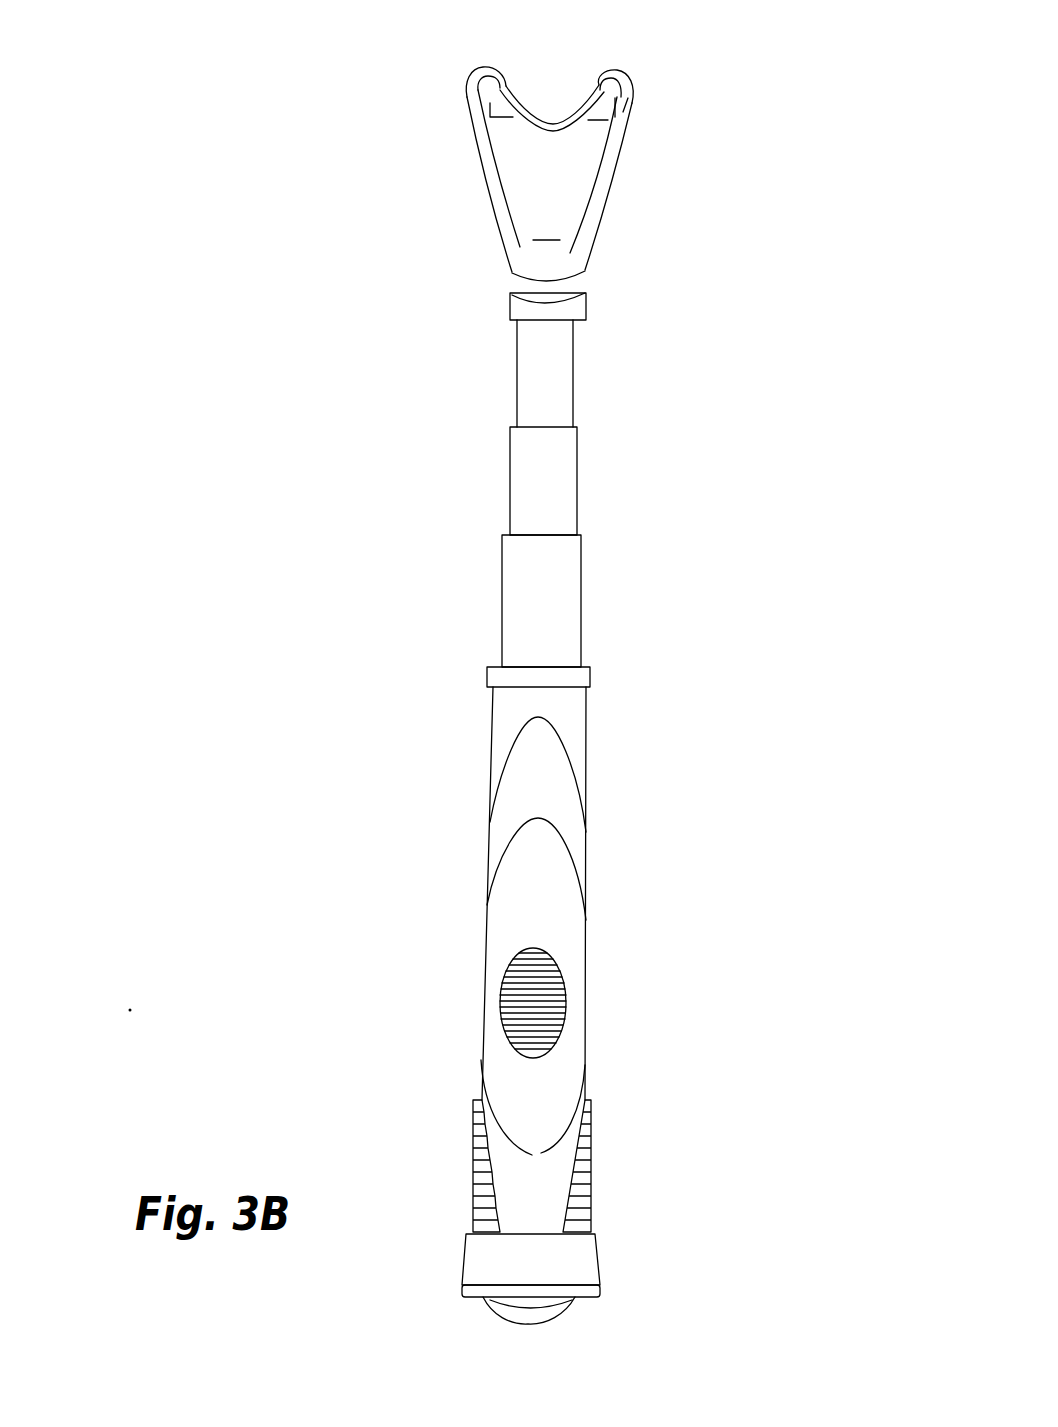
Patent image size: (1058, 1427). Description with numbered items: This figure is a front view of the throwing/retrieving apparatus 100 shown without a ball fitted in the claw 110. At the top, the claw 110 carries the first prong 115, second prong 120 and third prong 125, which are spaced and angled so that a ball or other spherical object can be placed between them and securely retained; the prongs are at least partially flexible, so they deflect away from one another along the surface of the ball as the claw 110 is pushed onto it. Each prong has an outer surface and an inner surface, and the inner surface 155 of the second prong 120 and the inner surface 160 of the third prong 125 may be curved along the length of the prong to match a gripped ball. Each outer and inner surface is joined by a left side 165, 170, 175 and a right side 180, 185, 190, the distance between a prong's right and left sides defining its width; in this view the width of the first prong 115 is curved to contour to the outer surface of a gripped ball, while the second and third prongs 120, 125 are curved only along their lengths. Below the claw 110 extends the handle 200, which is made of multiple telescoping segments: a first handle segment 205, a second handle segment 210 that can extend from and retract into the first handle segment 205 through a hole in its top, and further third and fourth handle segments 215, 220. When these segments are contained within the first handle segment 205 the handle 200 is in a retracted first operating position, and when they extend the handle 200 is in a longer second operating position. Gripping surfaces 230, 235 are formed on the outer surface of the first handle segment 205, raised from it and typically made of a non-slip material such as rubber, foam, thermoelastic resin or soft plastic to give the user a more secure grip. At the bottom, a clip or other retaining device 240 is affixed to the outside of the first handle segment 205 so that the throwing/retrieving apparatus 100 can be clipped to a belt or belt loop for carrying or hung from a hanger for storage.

The throwing/retrieving apparatus 100 is at (662, 204).
The claw 110 is at (609, 207).
The first prong 115 is at (510, 296).
The second prong 120 is at (630, 86).
The third prong 125 is at (476, 74).
The inner surface 155 is at (626, 130).
The inner surface 160 is at (497, 137).
The left side 165 is at (586, 304).
The left side 170 is at (636, 112).
The left side 175 is at (506, 78).
The right side 180 is at (513, 295).
The right side 185 is at (600, 84).
The right side 190 is at (466, 99).
The handle 200 is at (470, 1056).
The first handle segment 205 is at (586, 737).
The second handle segment 210 is at (581, 597).
The third handle segment 215 is at (577, 473).
The fourth handle segment 220 is at (573, 373).
The gripping surface 230 is at (560, 1010).
The gripping surface 235 is at (590, 1147).
The retaining device 240 is at (522, 1322).